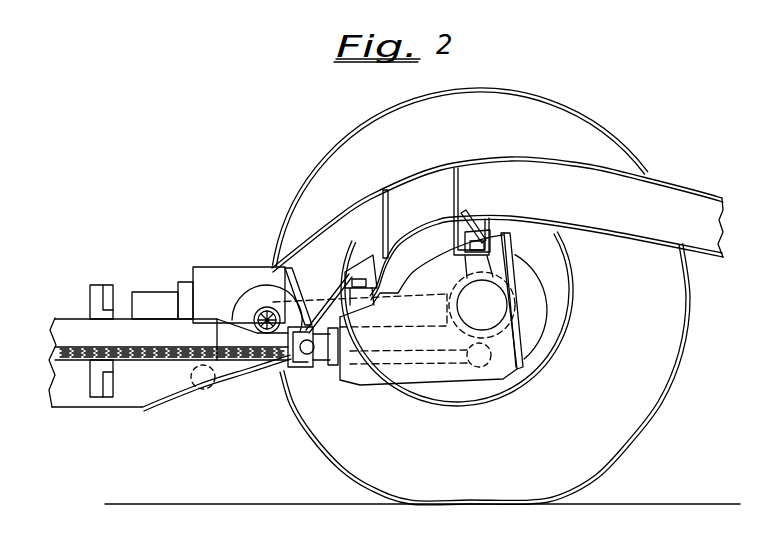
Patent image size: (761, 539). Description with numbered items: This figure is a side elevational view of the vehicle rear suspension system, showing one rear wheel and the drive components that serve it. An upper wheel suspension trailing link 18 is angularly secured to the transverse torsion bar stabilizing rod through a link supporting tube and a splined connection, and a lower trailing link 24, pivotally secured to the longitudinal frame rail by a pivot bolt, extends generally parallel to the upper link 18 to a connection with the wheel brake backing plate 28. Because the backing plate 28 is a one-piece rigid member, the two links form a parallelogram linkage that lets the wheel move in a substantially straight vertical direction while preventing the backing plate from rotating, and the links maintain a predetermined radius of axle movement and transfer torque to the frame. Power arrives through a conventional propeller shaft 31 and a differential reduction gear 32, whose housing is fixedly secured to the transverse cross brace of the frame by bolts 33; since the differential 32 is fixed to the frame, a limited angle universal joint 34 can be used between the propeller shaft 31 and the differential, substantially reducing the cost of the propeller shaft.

The upper wheel suspension trailing link 18 is at (343, 308).
The lower trailing link 24 is at (290, 369).
The wheel brake backing plate 28 is at (537, 319).
The propeller shaft 31 is at (65, 318).
The differential reduction gear 32 is at (402, 378).
The bolts 33 is at (360, 272).
The limited angle universal joint 34 is at (277, 378).